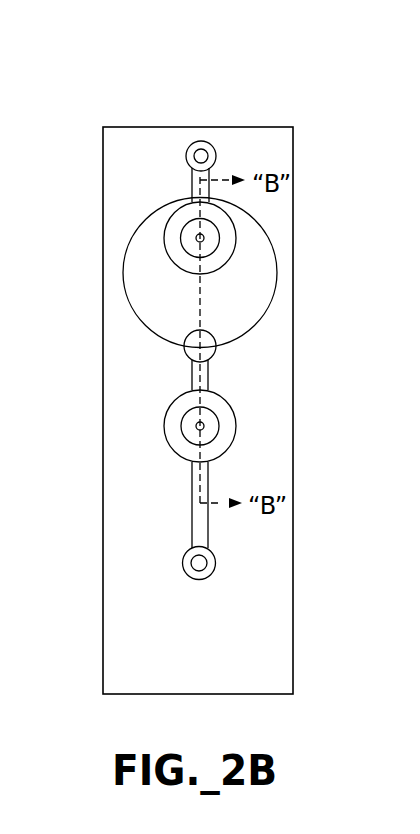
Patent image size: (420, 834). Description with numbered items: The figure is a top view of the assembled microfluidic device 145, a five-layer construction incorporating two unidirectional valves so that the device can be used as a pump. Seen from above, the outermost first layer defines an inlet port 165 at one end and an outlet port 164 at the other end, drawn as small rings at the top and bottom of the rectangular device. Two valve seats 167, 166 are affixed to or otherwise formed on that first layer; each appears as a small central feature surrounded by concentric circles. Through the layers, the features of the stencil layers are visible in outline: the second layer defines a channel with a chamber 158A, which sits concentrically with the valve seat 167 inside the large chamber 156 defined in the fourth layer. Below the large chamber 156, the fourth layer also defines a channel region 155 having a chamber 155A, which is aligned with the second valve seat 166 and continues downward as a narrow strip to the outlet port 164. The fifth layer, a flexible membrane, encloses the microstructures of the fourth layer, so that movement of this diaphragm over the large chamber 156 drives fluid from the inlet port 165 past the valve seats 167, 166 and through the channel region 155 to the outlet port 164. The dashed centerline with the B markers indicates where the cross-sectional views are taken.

The microfluidic device 145 is at (118, 70).
The inlet port 165 is at (191, 152).
The large chamber 156 is at (123, 255).
The chamber 158A is at (175, 267).
The valve seat 167 is at (182, 232).
The chamber 155A is at (173, 451).
The valve seat 166 is at (178, 424).
The channel region 155 is at (192, 517).
The outlet port 164 is at (182, 565).